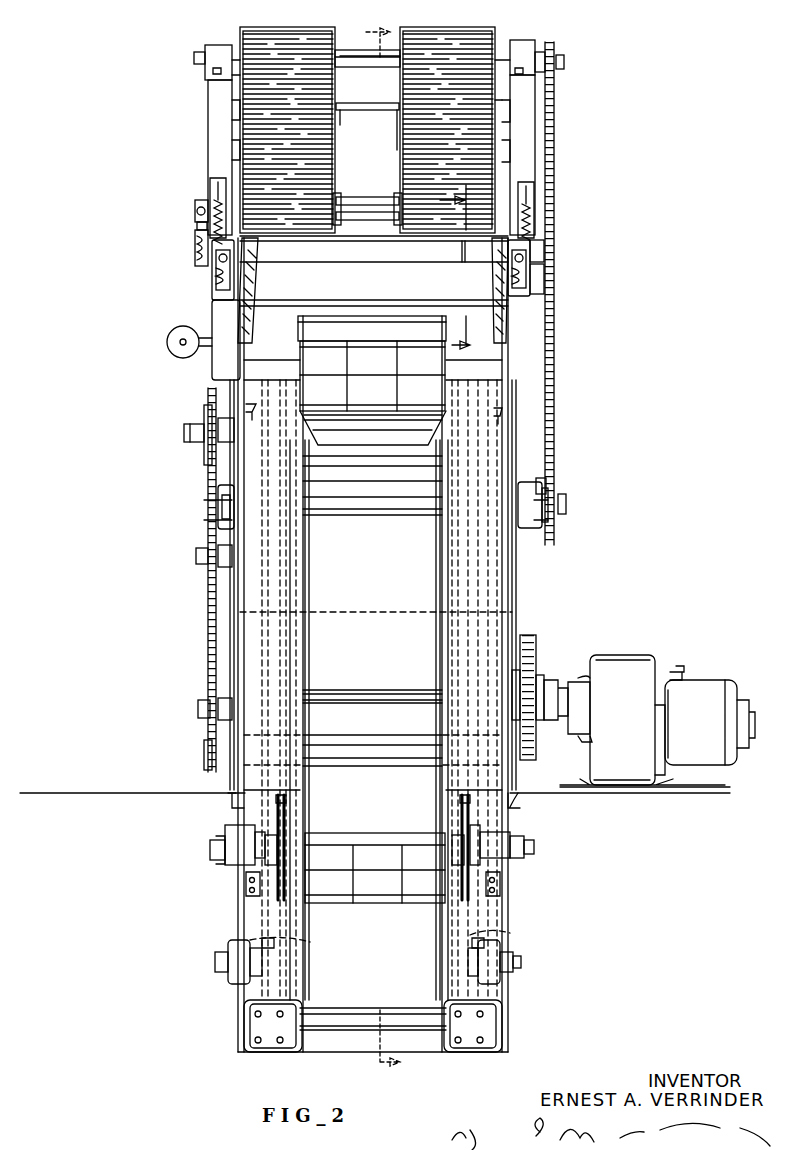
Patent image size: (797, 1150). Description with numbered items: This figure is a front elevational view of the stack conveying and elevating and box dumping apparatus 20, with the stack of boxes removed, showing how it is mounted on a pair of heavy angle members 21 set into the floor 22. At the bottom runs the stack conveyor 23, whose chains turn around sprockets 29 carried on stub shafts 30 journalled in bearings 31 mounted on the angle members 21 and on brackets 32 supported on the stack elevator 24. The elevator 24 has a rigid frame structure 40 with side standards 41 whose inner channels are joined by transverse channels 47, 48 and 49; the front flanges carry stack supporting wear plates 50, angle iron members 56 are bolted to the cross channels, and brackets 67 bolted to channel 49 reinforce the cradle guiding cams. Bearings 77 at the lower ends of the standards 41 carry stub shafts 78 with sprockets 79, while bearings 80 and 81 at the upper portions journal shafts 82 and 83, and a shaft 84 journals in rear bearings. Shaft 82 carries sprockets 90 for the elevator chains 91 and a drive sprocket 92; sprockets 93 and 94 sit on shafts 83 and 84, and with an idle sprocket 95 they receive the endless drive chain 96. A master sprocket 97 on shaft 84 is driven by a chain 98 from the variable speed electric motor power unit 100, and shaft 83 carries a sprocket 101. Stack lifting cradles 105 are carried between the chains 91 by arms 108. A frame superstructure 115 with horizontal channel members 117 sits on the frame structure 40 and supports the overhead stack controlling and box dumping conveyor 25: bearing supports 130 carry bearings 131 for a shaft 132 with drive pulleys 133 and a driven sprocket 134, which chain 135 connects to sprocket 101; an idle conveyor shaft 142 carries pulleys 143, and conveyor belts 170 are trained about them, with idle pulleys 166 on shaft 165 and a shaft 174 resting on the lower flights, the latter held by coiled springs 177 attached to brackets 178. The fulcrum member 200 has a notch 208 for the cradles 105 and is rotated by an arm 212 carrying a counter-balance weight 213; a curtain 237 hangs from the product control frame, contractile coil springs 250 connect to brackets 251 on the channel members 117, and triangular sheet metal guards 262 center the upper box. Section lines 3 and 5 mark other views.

The stack conveying and elevating and box dumping apparatus 20 is at (109, 524).
The angle members 21 is at (520, 794).
The floor 22 is at (722, 794).
The stack conveyor 23 is at (448, 796).
The stack elevator 24 is at (520, 624).
The stack controlling and box dumping conveyor 25 is at (158, 147).
The sprockets 29 is at (480, 858).
The stub shafts 30 is at (548, 858).
The bearings 31 is at (528, 864).
The brackets 32 is at (522, 892).
The frame structure 40 is at (256, 653).
The side standards 41 is at (497, 998).
The transverse channel 47 is at (382, 1014).
The transverse channel 48 is at (388, 744).
The transverse channel 49 is at (386, 491).
The stack supporting wear plates 50 is at (448, 550).
The angle iron members 56 is at (442, 580).
The brackets 67 is at (428, 418).
The bearings 77 is at (520, 950).
The stub shafts 78 is at (542, 972).
The sprockets 79 is at (478, 936).
The bearings 80 is at (498, 414).
The bearings 81 is at (525, 538).
The shaft 82 is at (184, 438).
The shaft 83 is at (565, 505).
The shaft 84 is at (418, 690).
The sprockets 90 is at (484, 392).
The elevator chains 91 is at (512, 612).
The drive sprocket 92 is at (206, 420).
The sprocket 93 is at (206, 502).
The sprocket 94 is at (220, 734).
The idle sprocket 95 is at (206, 564).
The endless drive chain 96 is at (212, 612).
The master sprocket 97 is at (540, 662).
The chain 98 is at (526, 640).
The variable speed electric motor power unit 100 is at (694, 683).
The sprocket 101 is at (554, 494).
The stack lifting cradles 105 is at (340, 336).
The arms 108 is at (480, 943).
The frame superstructure 115 is at (202, 298).
The channel members 117 is at (516, 284).
The bearing supports 130 is at (532, 108).
The bearings 131 is at (553, 46).
The shaft 132 is at (378, 68).
The drive pulleys 133 is at (405, 58).
The driven sprocket 134 is at (556, 68).
The chain 135 is at (558, 135).
The idle conveyor shaft 142 is at (395, 110).
The pulleys 143 is at (407, 148).
The shaft 165 is at (372, 200).
The idle pulleys 166 is at (534, 170).
The conveyor belts 170 is at (488, 39).
The shaft 174 is at (398, 258).
The coiled springs 177 is at (196, 242).
The brackets 178 is at (196, 264).
The fulcrum member 200 is at (396, 298).
The notch 208 is at (385, 316).
The arm 212 is at (170, 340).
The counter-balance weight 213 is at (180, 349).
The curtain 237 is at (456, 258).
The contractile coil springs 250 is at (540, 288).
The brackets 251 is at (542, 259).
The triangular sheet metal guards 262 is at (470, 278).
The section line 3 is at (379, 546).
The section line 5 is at (454, 265).